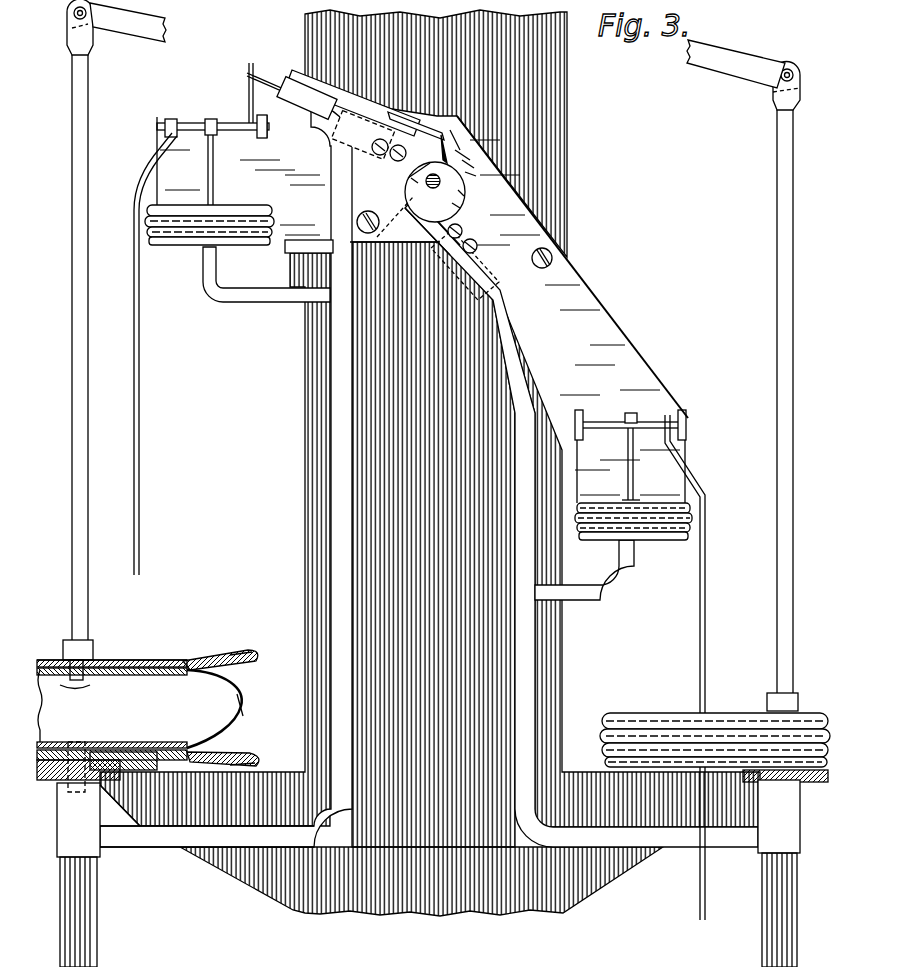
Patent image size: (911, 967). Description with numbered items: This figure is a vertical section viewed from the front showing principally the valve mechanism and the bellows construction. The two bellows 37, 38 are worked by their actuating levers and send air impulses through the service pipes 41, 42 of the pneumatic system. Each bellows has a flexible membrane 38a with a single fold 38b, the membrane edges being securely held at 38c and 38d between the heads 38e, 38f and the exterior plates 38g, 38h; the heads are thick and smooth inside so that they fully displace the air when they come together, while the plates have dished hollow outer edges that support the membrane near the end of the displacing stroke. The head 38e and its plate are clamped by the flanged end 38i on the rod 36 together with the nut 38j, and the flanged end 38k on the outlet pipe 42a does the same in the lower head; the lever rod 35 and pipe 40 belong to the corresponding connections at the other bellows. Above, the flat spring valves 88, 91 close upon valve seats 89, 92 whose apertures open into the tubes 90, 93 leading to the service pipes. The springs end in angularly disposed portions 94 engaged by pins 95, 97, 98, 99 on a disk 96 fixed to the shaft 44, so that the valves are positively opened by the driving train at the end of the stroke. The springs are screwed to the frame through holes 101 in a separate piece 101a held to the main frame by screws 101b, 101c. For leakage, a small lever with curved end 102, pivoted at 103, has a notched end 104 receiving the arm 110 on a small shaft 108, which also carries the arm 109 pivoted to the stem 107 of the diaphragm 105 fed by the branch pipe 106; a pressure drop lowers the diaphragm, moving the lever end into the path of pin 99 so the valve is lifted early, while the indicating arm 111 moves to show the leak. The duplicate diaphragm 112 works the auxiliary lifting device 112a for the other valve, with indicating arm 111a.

The right lever 35 is at (777, 624).
The rod 36 is at (86, 528).
The bellows 37 is at (733, 716).
The bellows 38 is at (160, 690).
The flexible membrane 38a is at (236, 690).
The fold 38b is at (242, 710).
The membrane edge holding point 38c is at (150, 658).
The membrane edge holding point 38d is at (190, 752).
The head 38e is at (205, 658).
The head 38f is at (238, 764).
The exterior plate 38g is at (248, 654).
The exterior plate 38h is at (258, 760).
The flanged end 38i is at (48, 660).
The nut 38j is at (90, 645).
The flanged end 38k is at (77, 742).
The pipe 40 is at (152, 848).
The service pipe 41 is at (770, 938).
The service pipe 42 is at (95, 941).
The outlet pipe 42a is at (126, 805).
The shaft 44 is at (465, 184).
The valve 88 is at (412, 115).
The valve seat 89 is at (447, 133).
The tube 90 is at (348, 263).
The valve 91 is at (430, 250).
The valve seat 92 is at (440, 268).
The tube 93 is at (493, 370).
The angularly disposed portion 94 is at (466, 148).
The pin 95 is at (474, 160).
The disk 96 is at (476, 172).
The pin 97 is at (466, 191).
The pin 98 is at (458, 206).
The pin 99 is at (410, 179).
The holes 101 is at (348, 100).
The separate frame piece 101a is at (598, 290).
The screw 101b is at (300, 253).
The screw 101c is at (556, 258).
The auxiliary valve opening lever 102 is at (462, 140).
The pivot 103 is at (322, 96).
The notched end 104 is at (265, 78).
The diaphragm 105 is at (190, 232).
The branch pipe 106 is at (257, 304).
The stem 107 is at (214, 176).
The small shaft 108 is at (198, 122).
The arm 109 is at (206, 136).
The arm 110 is at (249, 85).
The indicating arm 111 is at (139, 376).
The indicating arm 111a is at (706, 604).
The diaphragm 112 is at (636, 528).
The auxiliary lifting device 112a is at (385, 221).